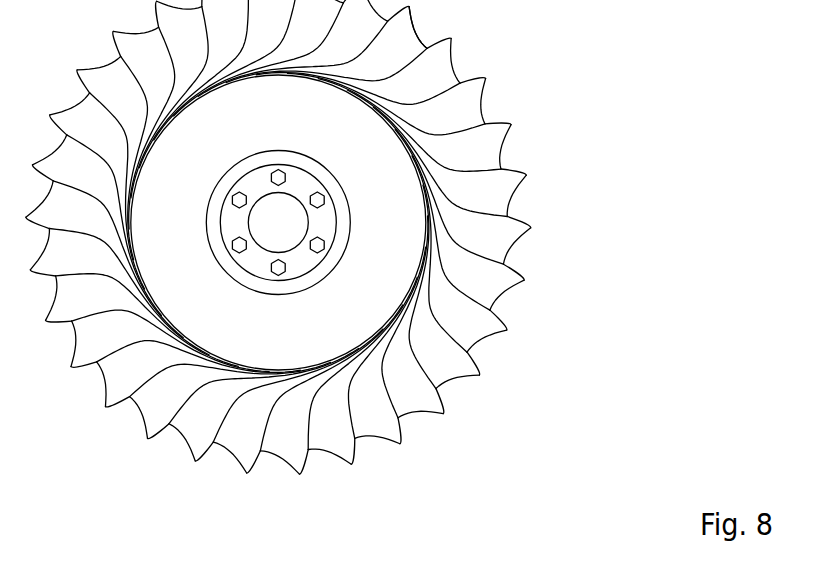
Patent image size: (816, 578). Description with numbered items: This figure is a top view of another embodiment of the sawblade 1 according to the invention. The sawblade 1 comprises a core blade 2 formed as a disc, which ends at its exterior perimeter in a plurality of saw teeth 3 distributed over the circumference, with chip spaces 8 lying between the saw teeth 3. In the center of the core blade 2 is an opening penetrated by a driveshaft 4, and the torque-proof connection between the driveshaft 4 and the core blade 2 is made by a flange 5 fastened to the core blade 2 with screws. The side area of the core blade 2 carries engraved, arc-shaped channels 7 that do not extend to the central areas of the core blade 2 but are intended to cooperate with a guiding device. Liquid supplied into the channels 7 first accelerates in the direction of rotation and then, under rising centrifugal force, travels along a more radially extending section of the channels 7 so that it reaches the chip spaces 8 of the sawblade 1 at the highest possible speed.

The sawblade 1 is at (369, 243).
The core blade 2 is at (365, 143).
The saw teeth 3 is at (490, 78).
The driveshaft 4 is at (283, 230).
The flange 5 is at (328, 228).
The channels 7 is at (432, 253).
The chip spaces 8 is at (425, 37).